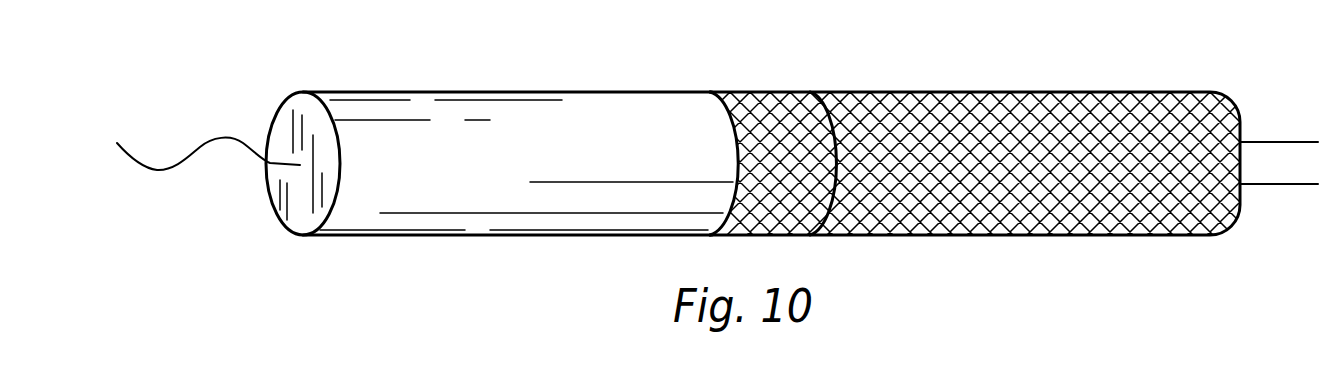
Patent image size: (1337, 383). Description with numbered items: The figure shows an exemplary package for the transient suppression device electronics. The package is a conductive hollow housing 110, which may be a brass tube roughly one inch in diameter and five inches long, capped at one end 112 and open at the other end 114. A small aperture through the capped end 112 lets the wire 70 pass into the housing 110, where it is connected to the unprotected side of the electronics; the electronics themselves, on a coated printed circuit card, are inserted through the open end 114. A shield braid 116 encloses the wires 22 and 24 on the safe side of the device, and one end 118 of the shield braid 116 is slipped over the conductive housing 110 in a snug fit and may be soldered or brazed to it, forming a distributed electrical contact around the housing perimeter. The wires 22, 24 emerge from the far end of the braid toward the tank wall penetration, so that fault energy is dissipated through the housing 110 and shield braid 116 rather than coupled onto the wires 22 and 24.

The conductive hollow housing 110 is at (455, 256).
The capped end 112 is at (307, 236).
The wire 70 is at (207, 170).
The shield braid 116 is at (1142, 223).
The end of shield braid 118 is at (744, 92).
The open end 114 is at (840, 155).
The wire 22 is at (1270, 141).
The wire 24 is at (1277, 185).